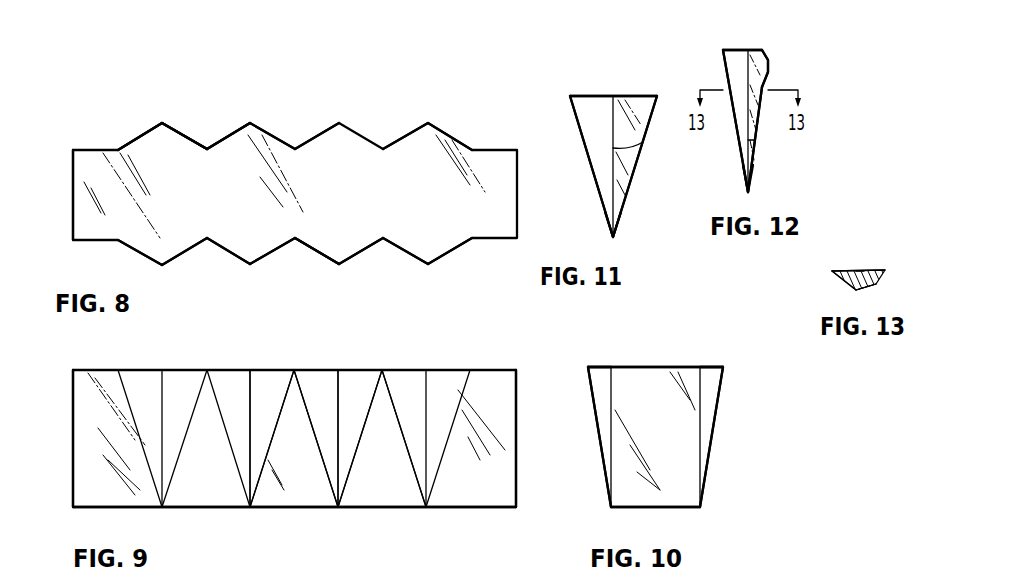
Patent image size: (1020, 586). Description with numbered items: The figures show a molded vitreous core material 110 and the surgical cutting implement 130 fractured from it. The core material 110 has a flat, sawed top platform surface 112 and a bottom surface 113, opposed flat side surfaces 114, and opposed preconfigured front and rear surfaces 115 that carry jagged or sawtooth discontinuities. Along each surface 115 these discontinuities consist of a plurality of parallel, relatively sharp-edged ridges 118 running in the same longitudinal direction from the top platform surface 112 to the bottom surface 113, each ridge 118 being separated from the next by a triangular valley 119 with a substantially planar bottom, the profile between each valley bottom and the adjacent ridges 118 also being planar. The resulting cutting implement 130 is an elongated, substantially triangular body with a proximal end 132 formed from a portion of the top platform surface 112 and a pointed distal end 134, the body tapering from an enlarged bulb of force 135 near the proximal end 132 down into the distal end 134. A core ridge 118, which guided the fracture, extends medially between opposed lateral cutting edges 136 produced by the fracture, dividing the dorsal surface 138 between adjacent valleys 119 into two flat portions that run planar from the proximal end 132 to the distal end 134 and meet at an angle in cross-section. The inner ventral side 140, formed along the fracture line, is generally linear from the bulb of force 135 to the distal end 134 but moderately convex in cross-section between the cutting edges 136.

In FIG. 8, the core material 110 is at (362, 83).
In FIG. 9, the core material 110 is at (363, 357).
In FIG. 10, the core material 110 is at (703, 326).
In FIG. 8, the top platform surface 112 is at (415, 209).
In FIG. 9, the top platform surface 112 is at (393, 370).
In FIG. 10, the top platform surface 112 is at (645, 367).
In FIG. 9, the bottom surface 113 is at (312, 508).
In FIG. 10, the bottom surface 113 is at (678, 507).
In FIG. 8, the side surfaces 114 is at (73, 181).
In FIG. 9, the side surfaces 114 is at (73, 472).
In FIG. 10, the side surfaces 114 is at (683, 458).
In FIG. 8, the front and rear surfaces 115 is at (250, 122).
In FIG. 9, the front and rear surfaces 115 is at (210, 486).
In FIG. 10, the front and rear surfaces 115 is at (726, 405).
In FIG. 8, the ridges 118 is at (162, 123).
In FIG. 9, the ridges 118 is at (338, 455).
In FIG. 10, the ridges 118 is at (588, 381).
In FIG. 11, the ridges 118 is at (643, 143).
In FIG. 12, the ridges 118 is at (742, 142).
In FIG. 13, the ridges 118 is at (857, 290).
In FIG. 8, the triangular valley 119 is at (295, 149).
In FIG. 9, the triangular valley 119 is at (292, 402).
In FIG. 11, the cutting implement 130 is at (641, 62).
In FIG. 12, the cutting implement 130 is at (766, 38).
In FIG. 13, the cutting implement 130 is at (863, 236).
In FIG. 11, the proximal end 132 is at (613, 96).
In FIG. 12, the proximal end 132 is at (735, 50).
In FIG. 11, the distal end 134 is at (613, 237).
In FIG. 12, the distal end 134 is at (752, 192).
In FIG. 12, the bulb of force 135 is at (770, 72).
In FIG. 11, the cutting edges 136 is at (590, 170).
In FIG. 12, the cutting edges 136 is at (752, 125).
In FIG. 13, the cutting edges 136 is at (832, 271).
In FIG. 11, the dorsal surface 138 is at (587, 115).
In FIG. 12, the dorsal surface 138 is at (730, 66).
In FIG. 13, the dorsal surface 138 is at (857, 289).
In FIG. 12, the ventral side 140 is at (752, 147).
In FIG. 13, the ventral side 140 is at (860, 270).